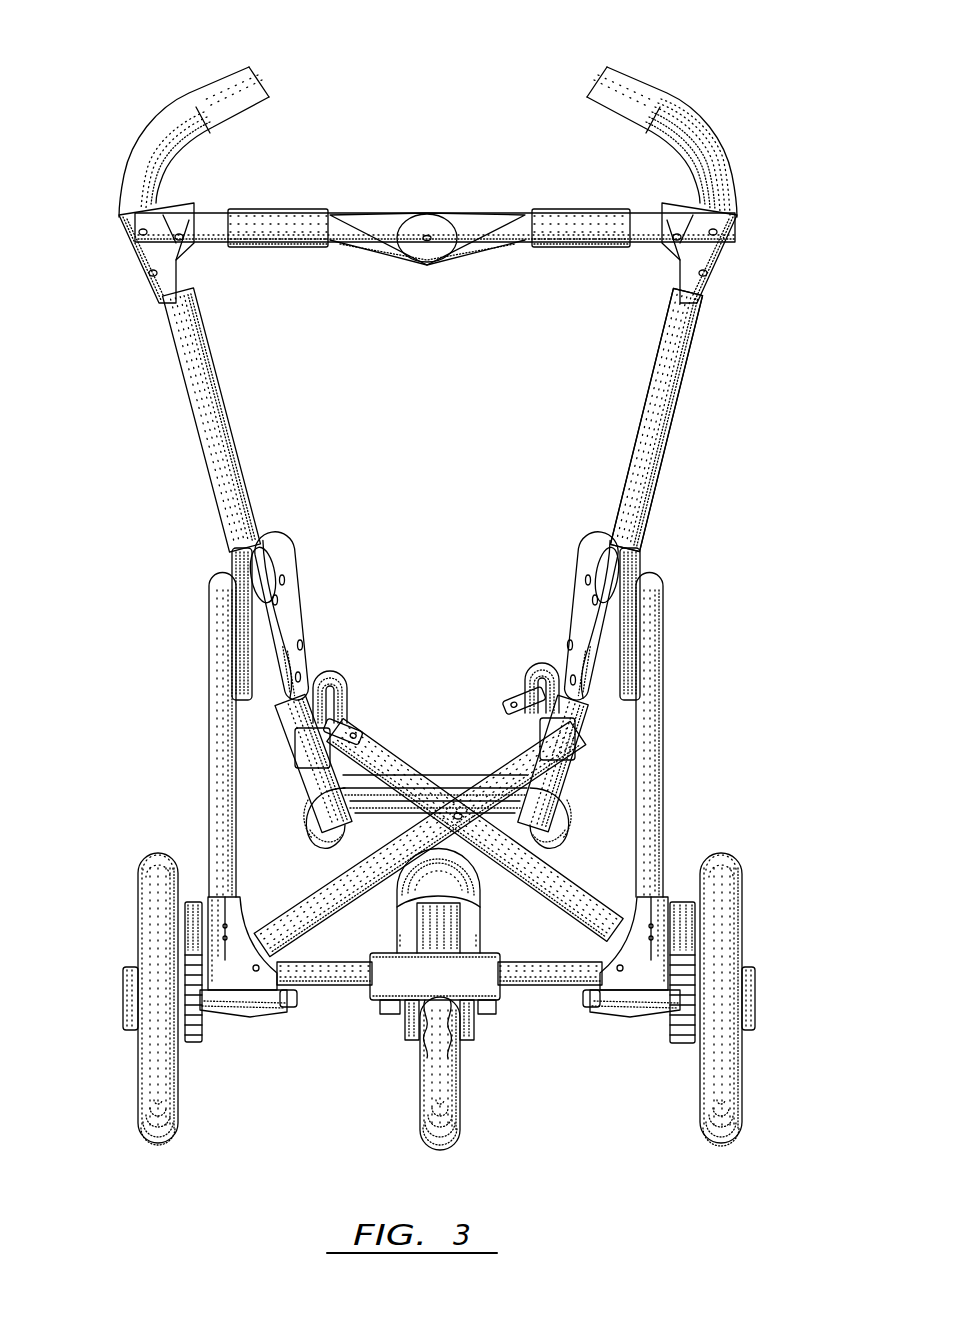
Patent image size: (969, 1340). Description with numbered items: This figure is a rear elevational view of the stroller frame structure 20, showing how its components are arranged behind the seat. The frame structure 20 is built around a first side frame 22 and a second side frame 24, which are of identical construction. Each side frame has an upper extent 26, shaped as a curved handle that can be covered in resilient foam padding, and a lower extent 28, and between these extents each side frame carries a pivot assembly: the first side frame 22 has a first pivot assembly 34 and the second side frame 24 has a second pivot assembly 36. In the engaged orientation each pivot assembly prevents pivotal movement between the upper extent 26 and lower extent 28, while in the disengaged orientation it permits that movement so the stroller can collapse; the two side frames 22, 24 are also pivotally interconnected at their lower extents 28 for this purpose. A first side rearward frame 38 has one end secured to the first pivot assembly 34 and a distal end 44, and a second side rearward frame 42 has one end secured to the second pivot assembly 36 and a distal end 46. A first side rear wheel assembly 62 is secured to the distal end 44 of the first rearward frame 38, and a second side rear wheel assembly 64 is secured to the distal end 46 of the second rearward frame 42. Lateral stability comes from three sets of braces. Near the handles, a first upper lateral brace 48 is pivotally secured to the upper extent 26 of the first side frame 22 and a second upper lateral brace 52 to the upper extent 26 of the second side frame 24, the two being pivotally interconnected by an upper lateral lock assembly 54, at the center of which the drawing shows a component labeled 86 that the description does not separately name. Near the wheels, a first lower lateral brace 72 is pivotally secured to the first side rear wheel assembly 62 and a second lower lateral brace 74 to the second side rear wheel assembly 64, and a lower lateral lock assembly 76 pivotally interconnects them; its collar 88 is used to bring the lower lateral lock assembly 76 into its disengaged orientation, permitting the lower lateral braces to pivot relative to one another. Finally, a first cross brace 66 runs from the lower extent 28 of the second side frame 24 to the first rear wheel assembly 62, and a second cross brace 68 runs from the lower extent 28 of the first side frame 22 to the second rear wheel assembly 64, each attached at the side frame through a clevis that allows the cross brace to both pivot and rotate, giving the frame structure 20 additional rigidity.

The frame structure 20 is at (451, 140).
The first side frame 22 is at (655, 450).
The second side frame 24 is at (205, 412).
The upper extent 26 is at (690, 318).
The lower extent 28 is at (590, 780).
The first pivot assembly 34 is at (608, 622).
The second pivot assembly 36 is at (278, 622).
The first side rearward frame 38 is at (652, 680).
The second side rearward frame 42 is at (215, 715).
The distal end 44 is at (648, 893).
The distal end 46 is at (218, 893).
The first upper lateral brace 48 is at (562, 215).
The second upper lateral brace 52 is at (278, 212).
The upper lateral lock assembly 54 is at (410, 190).
The first side rear wheel assembly 62 is at (605, 1000).
The second side rear wheel assembly 64 is at (238, 1002).
The first cross brace 66 is at (582, 914).
The second cross brace 68 is at (338, 880).
The first lower lateral brace 72 is at (512, 982).
The second lower lateral brace 74 is at (333, 985).
The lower lateral lock assembly 76 is at (478, 990).
The handle hinge 86 is at (452, 252).
The collar 88 is at (418, 965).